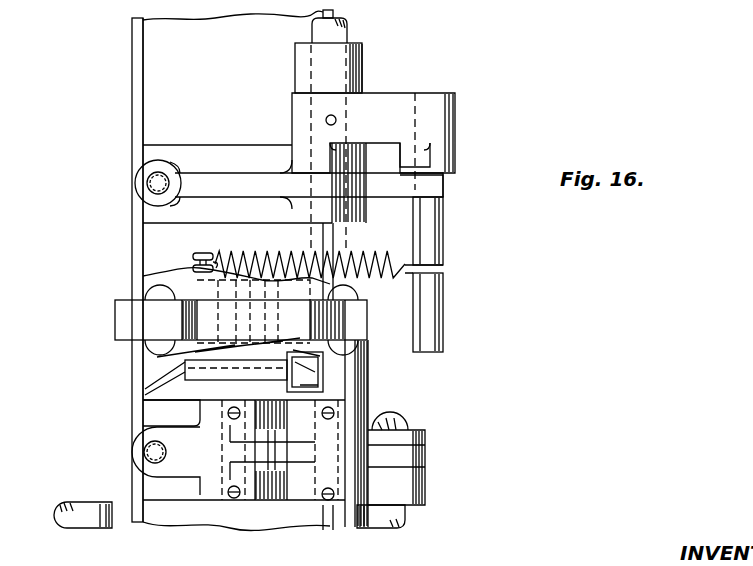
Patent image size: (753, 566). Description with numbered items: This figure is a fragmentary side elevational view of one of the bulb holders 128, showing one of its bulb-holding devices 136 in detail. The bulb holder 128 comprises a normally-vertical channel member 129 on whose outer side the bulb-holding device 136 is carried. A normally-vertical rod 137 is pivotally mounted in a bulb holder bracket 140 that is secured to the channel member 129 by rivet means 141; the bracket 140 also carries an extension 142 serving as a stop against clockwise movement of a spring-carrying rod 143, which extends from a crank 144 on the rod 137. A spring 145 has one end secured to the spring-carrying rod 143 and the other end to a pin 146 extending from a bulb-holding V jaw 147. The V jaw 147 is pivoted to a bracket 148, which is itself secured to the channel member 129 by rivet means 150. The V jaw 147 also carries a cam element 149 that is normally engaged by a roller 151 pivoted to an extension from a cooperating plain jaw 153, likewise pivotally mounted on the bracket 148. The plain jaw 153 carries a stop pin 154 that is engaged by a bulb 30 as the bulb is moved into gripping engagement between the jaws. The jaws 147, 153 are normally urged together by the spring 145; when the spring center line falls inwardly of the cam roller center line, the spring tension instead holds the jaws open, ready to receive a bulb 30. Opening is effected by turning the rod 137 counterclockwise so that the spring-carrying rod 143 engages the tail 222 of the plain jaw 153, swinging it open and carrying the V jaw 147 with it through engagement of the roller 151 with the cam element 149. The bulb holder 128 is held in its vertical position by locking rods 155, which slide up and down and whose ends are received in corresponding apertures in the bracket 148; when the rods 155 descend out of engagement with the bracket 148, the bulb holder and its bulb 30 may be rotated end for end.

The bulb holder 128 is at (132, 83).
The channel member 129 is at (130, 113).
The rod 137 is at (345, 36).
The crank 144 is at (387, 100).
The bulb holder bracket 140 is at (160, 160).
The rivet means 141 is at (150, 190).
The extension 142 is at (445, 188).
The bulb-holding device 136 is at (447, 258).
The spring-carrying rod 143 is at (440, 312).
The spring 145 is at (345, 252).
The pin 146 is at (208, 252).
The V jaw 147 is at (125, 312).
The bulb 30 is at (160, 278).
The tail 222 is at (388, 336).
The roller 151 is at (369, 397).
The stop pin 154 is at (160, 385).
The plain jaw 153 is at (375, 345).
The bracket 148 is at (152, 416).
The cam element 149 is at (145, 370).
The rivet means 150 is at (145, 455).
The locking rod 155 is at (62, 516).